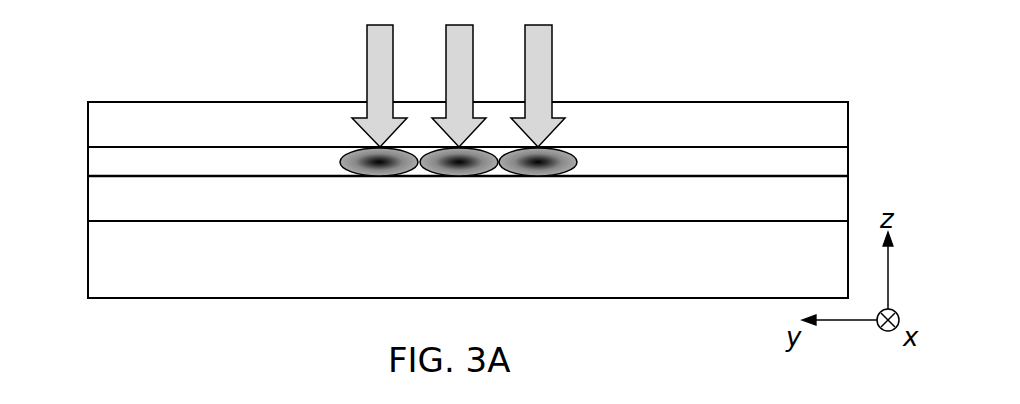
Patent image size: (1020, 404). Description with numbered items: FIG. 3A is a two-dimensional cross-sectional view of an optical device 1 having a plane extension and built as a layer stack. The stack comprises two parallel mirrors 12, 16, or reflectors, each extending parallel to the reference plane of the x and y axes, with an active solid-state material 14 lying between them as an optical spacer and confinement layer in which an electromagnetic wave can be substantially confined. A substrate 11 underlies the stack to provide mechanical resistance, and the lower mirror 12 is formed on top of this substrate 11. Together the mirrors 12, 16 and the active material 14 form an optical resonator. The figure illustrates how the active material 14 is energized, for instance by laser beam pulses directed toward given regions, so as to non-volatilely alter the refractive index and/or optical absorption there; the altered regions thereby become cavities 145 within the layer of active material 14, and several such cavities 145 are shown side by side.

The solar cell / light receiving device 1 is at (429, 207).
The substrate 11 is at (105, 262).
The mirror 12 is at (105, 195).
The active material 14 is at (97, 157).
The cavities 145 is at (401, 178).
The mirror 16 is at (102, 114).